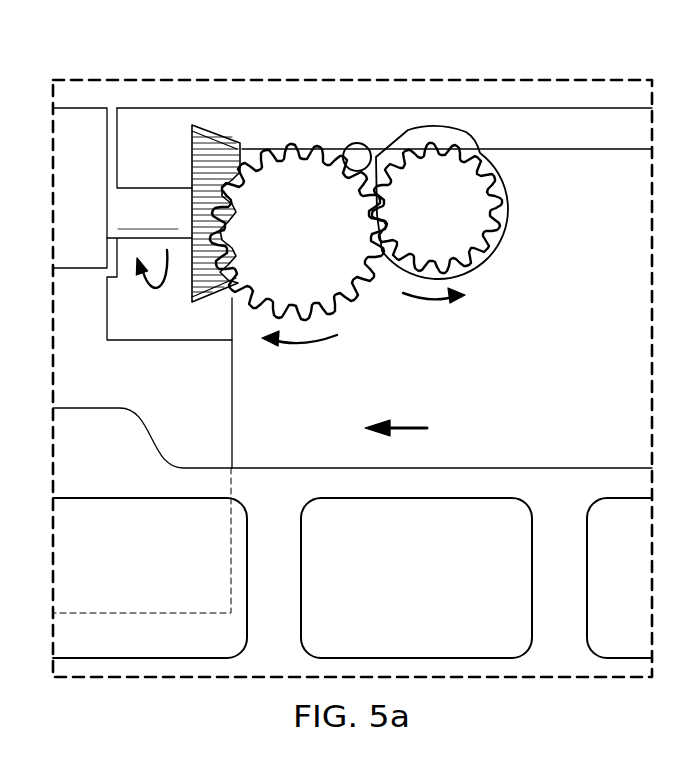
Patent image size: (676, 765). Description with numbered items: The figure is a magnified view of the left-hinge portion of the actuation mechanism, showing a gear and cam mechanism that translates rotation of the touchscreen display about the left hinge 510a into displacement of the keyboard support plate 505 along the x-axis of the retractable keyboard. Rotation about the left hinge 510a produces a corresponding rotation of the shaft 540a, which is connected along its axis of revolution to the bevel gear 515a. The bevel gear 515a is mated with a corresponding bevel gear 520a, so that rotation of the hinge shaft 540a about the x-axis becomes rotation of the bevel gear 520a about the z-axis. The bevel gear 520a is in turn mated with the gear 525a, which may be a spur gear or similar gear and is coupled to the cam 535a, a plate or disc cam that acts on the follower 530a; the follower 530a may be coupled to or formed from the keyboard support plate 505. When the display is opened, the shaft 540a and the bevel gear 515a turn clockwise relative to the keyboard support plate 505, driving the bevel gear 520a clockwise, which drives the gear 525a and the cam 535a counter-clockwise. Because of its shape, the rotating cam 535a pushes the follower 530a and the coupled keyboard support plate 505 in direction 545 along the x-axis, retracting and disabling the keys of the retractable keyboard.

The keyboard support plate 505 is at (556, 352).
The left hinge 510a is at (82, 108).
The bevel gear 515a is at (221, 133).
The bevel gear 520a is at (268, 246).
The spur gear 525a is at (412, 221).
The follower 530a is at (357, 143).
The cam 535a is at (432, 135).
The shaft 540a is at (163, 196).
The direction 545 is at (405, 427).